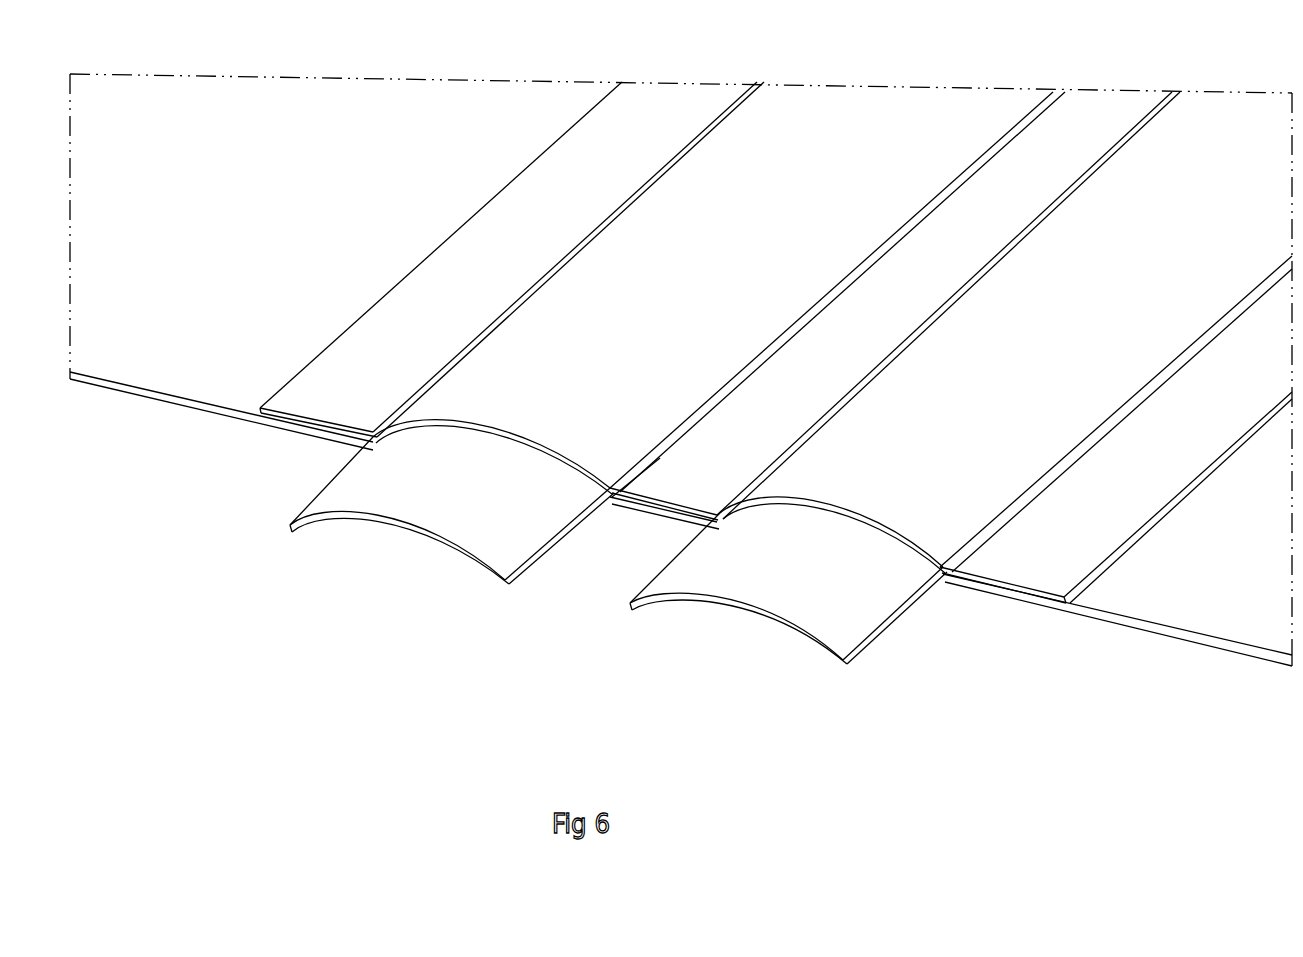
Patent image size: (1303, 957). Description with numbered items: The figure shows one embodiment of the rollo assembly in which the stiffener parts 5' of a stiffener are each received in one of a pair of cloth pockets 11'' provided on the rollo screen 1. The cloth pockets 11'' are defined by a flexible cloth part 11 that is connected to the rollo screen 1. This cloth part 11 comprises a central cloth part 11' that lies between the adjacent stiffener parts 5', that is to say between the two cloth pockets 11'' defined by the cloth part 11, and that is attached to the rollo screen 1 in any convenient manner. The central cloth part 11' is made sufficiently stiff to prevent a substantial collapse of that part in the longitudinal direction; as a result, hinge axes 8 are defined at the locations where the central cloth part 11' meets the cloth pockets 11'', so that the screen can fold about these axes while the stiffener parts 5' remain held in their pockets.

The rollo screen 1 is at (177, 382).
The cloth part 11 is at (512, 230).
The central cloth part 11' is at (895, 272).
The cloth pockets 11'' is at (1058, 312).
The stiffener parts 5' is at (618, 555).
The hinge axes 8 is at (660, 448).